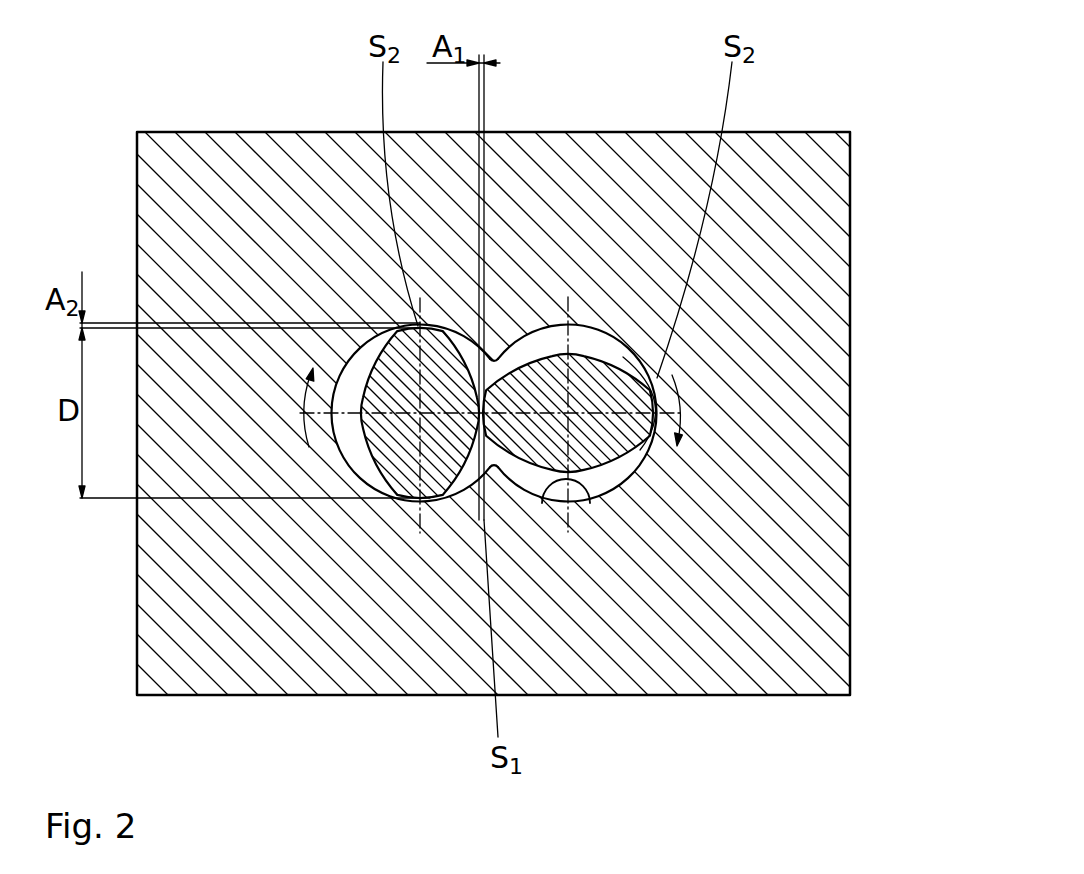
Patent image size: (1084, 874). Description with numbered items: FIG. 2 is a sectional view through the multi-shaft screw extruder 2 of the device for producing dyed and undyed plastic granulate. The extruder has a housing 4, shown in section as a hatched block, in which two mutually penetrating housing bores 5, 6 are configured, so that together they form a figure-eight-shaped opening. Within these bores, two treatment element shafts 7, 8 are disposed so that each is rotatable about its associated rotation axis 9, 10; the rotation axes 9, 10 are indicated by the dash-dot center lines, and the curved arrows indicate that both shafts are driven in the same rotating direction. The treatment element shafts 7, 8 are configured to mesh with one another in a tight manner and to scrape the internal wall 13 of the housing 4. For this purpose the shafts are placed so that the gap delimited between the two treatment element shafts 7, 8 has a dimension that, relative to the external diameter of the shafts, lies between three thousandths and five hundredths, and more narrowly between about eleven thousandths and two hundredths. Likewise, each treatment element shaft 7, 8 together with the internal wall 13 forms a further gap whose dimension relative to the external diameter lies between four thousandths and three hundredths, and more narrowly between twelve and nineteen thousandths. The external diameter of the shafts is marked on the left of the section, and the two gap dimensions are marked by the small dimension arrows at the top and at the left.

The multi-shaft screw extruder 2 is at (667, 120).
The housing 4 is at (277, 130).
The housing bore 5 is at (347, 440).
The housing bore 6 is at (578, 337).
The treatment element shaft 7 is at (423, 497).
The treatment element shaft 8 is at (562, 354).
The rotation axis 9 is at (420, 413).
The rotation axis 10 is at (612, 451).
The internal wall 13 is at (541, 495).